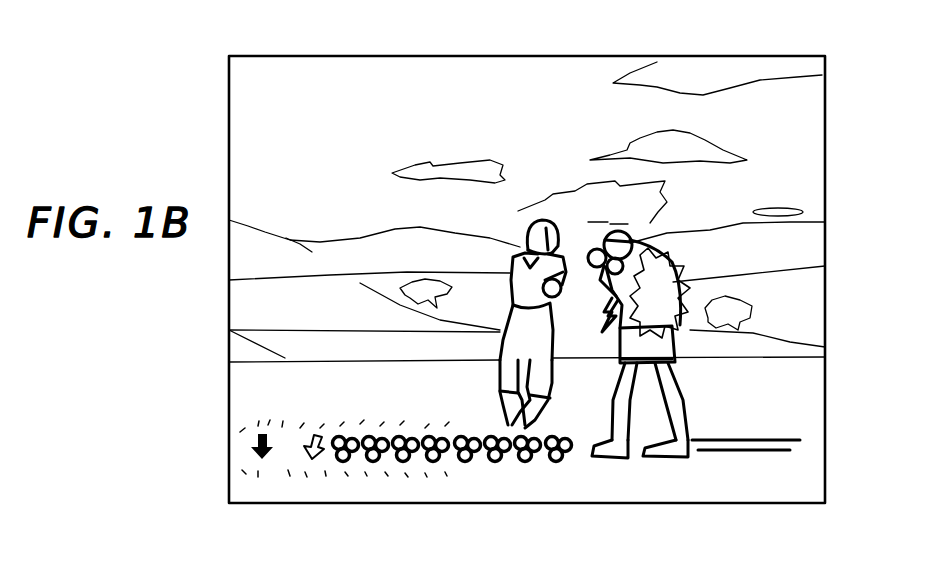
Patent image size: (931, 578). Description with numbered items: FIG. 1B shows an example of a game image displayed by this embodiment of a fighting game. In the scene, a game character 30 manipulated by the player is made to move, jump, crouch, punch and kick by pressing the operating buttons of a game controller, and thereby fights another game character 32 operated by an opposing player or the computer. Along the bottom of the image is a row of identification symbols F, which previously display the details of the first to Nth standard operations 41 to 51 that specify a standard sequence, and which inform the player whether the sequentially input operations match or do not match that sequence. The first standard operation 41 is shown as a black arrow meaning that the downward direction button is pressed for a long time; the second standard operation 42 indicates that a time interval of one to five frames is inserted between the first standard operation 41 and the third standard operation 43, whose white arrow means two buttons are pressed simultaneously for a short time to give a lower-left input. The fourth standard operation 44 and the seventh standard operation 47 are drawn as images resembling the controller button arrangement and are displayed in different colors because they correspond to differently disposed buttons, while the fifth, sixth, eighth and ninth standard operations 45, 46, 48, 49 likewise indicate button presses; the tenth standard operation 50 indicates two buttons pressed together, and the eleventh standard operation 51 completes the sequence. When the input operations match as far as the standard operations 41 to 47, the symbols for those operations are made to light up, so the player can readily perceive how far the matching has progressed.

The game character 30 is at (503, 307).
The another game character 32 is at (676, 350).
The identification symbols F is at (352, 410).
The first standard operation 41 is at (258, 466).
The second standard operation 42 is at (284, 466).
The third standard operation 43 is at (314, 466).
The fourth standard operation 44 is at (345, 466).
The fifth standard operation 45 is at (375, 466).
The sixth standard operation 46 is at (405, 466).
The seventh standard operation 47 is at (435, 466).
The eighth standard operation 48 is at (467, 466).
The ninth standard operation 49 is at (497, 466).
The tenth standard operation 50 is at (527, 466).
The eleventh standard operation 51 is at (558, 466).